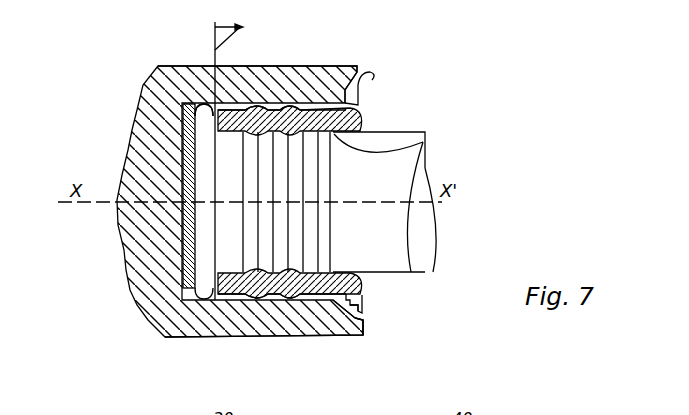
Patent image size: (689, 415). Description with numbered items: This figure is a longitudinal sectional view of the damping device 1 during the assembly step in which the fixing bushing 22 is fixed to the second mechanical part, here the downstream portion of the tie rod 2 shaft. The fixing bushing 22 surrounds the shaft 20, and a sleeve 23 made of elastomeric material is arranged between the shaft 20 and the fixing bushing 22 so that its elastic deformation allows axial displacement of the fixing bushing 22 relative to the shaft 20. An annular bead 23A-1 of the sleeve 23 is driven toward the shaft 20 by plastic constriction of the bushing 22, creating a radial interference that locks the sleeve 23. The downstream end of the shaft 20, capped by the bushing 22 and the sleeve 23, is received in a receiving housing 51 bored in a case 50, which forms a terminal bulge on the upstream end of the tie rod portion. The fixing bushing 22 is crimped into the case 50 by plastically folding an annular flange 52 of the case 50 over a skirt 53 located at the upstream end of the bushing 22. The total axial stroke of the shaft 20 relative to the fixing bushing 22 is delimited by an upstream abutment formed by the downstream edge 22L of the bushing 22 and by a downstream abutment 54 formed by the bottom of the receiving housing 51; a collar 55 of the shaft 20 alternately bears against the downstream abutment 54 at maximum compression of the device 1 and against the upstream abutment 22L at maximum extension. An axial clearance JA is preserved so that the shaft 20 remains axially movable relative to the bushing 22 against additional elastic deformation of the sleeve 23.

The damping device 1 is at (409, 69).
The tie rod 2 is at (243, 360).
The shaft 20 is at (408, 262).
The fixing bushing 22 is at (318, 103).
The downstream edge of the bushing 22L is at (236, 95).
The sleeve 23 is at (362, 118).
The annular bead 23A-1 is at (423, 142).
The case 50 is at (283, 326).
The receiving housing 51 is at (292, 92).
The flange 52 is at (377, 330).
The skirt 53 is at (355, 328).
The downstream abutment 54 is at (170, 124).
The collar 55 is at (199, 104).
The axial clearance JA is at (237, 24).